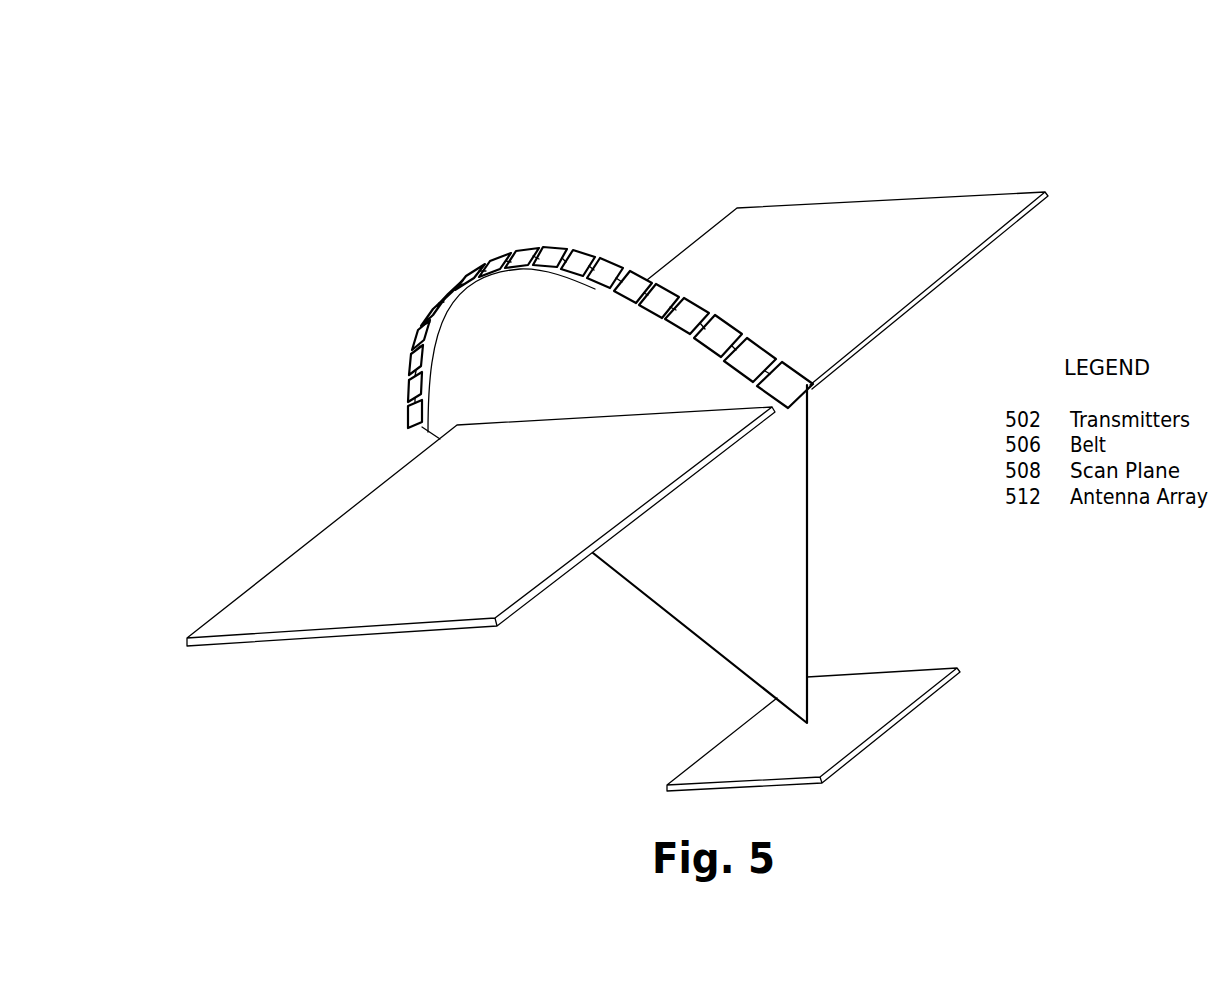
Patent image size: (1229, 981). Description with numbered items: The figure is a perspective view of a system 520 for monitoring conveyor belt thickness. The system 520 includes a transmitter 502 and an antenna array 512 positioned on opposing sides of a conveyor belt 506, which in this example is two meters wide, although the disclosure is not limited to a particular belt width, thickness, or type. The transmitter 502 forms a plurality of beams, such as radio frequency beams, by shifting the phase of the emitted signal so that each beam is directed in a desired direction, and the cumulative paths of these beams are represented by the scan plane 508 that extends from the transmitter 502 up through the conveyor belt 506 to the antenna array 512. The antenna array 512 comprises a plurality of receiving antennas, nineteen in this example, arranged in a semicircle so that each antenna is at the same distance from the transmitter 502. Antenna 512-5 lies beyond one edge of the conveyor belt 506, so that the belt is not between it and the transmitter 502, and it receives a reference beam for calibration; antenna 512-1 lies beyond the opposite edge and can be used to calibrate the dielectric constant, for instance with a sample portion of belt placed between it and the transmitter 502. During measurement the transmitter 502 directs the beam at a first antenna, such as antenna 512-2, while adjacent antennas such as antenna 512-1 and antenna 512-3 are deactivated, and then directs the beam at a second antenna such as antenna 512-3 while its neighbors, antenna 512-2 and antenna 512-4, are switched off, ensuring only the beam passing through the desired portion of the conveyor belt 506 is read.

The transmitter 502 is at (877, 680).
The conveyor belt 506 is at (435, 608).
The scan plane 508 is at (797, 537).
The antenna array 512 is at (474, 256).
The antenna 512-1 is at (408, 418).
The antenna 512-2 is at (408, 386).
The antenna 512-3 is at (410, 361).
The antenna 512-4 is at (413, 339).
The antenna 512-5 is at (802, 387).
The system 520 is at (773, 123).